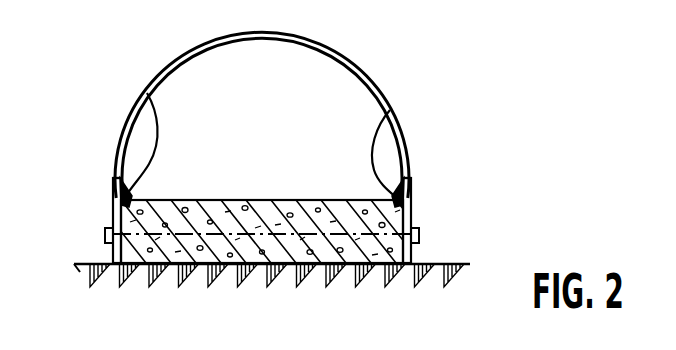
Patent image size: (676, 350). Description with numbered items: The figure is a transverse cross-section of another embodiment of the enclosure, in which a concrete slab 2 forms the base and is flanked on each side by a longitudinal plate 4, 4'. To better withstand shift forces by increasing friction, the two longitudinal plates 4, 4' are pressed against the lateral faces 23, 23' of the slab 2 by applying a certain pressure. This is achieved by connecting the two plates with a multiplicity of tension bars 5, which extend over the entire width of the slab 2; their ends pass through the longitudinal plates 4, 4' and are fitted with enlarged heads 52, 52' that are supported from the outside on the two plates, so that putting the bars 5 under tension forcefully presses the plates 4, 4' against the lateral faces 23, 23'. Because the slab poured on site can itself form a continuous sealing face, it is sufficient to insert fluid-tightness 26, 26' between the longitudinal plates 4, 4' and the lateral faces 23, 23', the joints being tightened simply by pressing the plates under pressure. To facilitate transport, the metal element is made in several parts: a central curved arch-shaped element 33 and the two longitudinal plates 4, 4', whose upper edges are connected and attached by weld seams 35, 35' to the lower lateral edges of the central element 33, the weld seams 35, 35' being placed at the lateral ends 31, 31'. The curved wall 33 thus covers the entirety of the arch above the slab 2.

The slab 2 is at (267, 243).
The longitudinal plate 4 is at (79, 220).
The longitudinal plate 4' is at (446, 220).
The tension bar 5 is at (182, 236).
The lateral face of the slab 23 is at (262, 193).
The lateral face of the slab 23' is at (391, 287).
The fluid-tightness 26 is at (132, 121).
The fluid-tightness 26' is at (405, 135).
The lateral end 31 is at (87, 176).
The lateral end 31' is at (454, 177).
The central curved arch-shaped element 33 is at (351, 61).
The weld seam 35 is at (90, 130).
The weld seam 35' is at (436, 147).
The enlarged head 52 is at (70, 241).
The enlarged head 52' is at (453, 239).